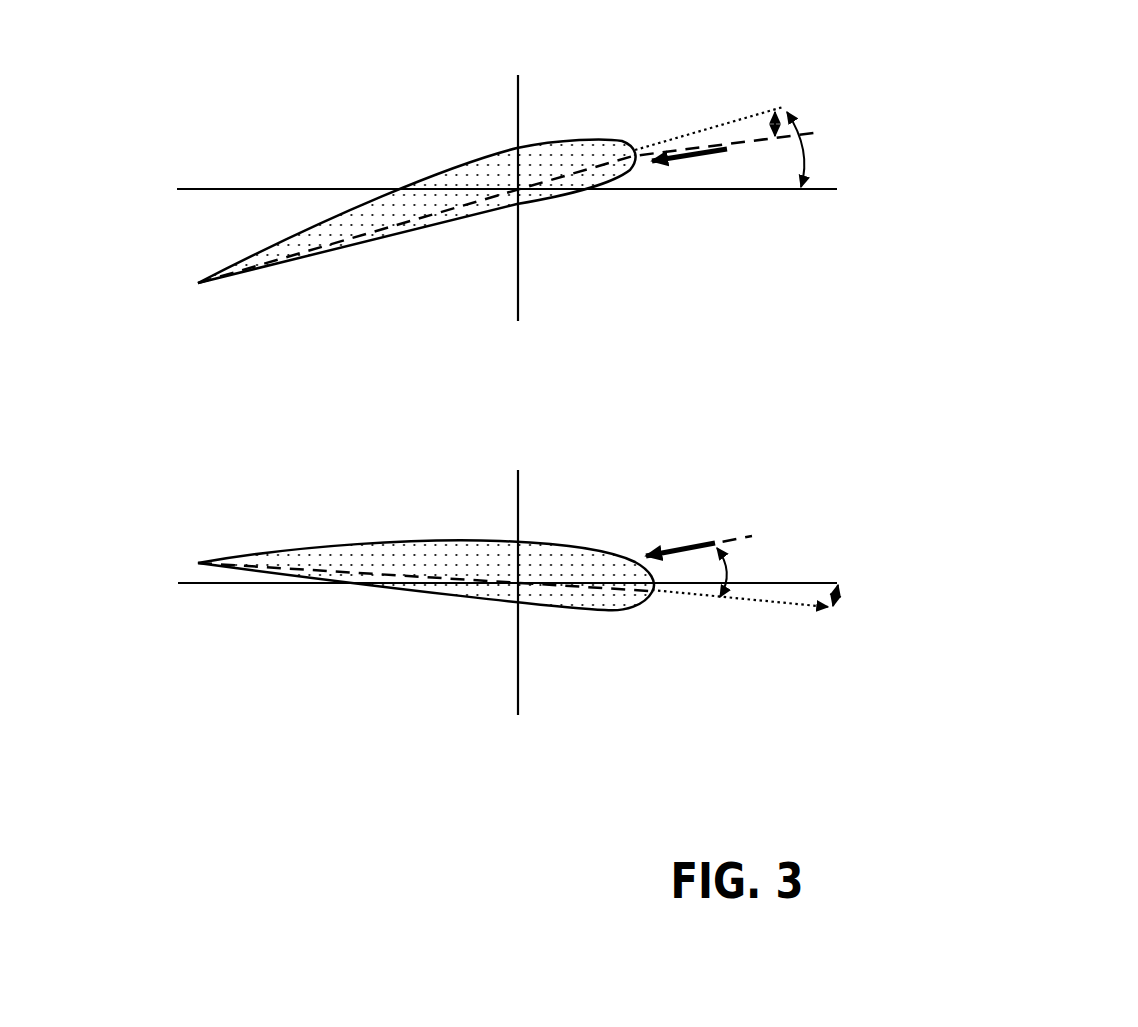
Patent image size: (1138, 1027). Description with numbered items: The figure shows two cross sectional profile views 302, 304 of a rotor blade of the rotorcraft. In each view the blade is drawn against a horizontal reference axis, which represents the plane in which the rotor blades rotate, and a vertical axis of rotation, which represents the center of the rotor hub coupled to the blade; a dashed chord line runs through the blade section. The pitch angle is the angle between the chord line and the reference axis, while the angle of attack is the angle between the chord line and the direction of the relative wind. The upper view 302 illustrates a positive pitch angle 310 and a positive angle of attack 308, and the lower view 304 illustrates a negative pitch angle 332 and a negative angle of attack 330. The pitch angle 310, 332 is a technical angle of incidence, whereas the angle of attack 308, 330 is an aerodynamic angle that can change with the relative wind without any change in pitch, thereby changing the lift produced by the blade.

The cross sectional view 302 is at (602, 177).
The cross sectional view 304 is at (623, 592).
The positive angle of attack 308 is at (770, 104).
The positive pitch angle 310 is at (814, 152).
The negative angle of attack 330 is at (744, 563).
The negative pitch angle 332 is at (868, 623).